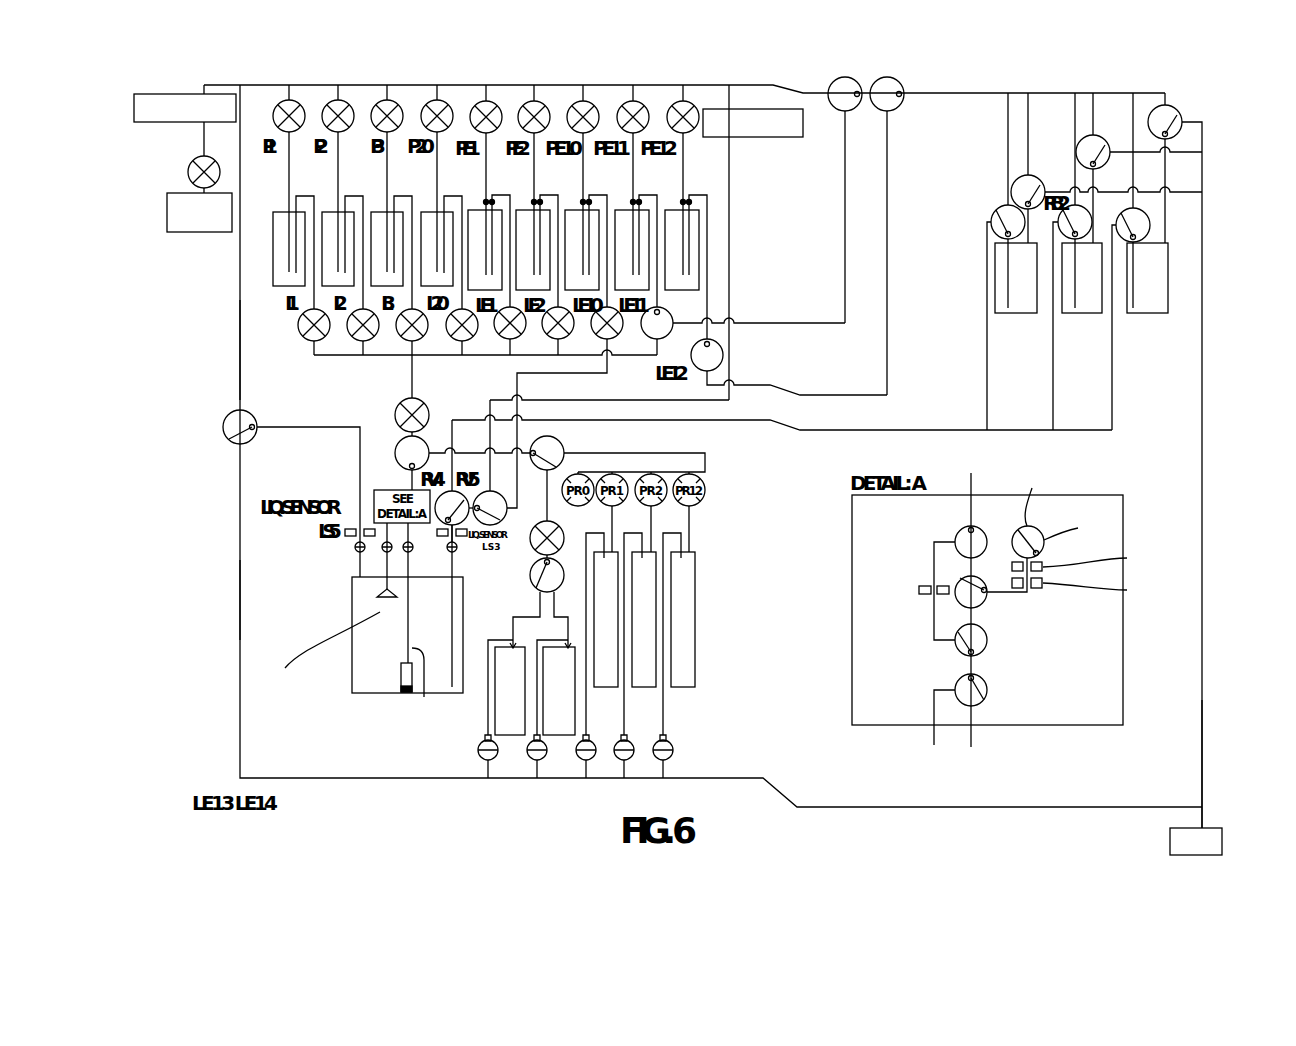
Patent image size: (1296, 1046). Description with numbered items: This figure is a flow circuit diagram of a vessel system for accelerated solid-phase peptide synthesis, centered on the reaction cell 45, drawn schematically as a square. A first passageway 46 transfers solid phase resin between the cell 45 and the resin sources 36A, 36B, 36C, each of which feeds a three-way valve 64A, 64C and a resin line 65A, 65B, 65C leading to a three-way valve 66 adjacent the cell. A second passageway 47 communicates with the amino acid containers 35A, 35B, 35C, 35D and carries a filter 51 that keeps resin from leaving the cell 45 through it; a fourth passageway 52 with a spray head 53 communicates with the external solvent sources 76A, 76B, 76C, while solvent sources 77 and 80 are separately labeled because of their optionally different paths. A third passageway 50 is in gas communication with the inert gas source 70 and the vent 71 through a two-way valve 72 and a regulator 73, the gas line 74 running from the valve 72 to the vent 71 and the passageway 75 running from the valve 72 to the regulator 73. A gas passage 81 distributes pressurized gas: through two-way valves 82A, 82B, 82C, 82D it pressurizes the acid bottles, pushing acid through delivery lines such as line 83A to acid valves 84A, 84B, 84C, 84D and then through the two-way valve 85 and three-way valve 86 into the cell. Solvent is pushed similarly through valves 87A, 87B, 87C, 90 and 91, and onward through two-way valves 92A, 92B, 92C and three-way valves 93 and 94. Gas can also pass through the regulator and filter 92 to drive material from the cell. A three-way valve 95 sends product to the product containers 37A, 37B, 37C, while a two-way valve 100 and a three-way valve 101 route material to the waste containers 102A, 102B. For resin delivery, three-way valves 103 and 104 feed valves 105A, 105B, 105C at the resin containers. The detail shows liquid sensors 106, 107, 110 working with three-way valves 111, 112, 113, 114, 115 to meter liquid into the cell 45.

The reaction cell 45 is at (352, 667).
The first passageway 46 is at (455, 602).
The second passageway 47 is at (410, 386).
The third passageway 50 is at (307, 428).
The filter 51 is at (401, 683).
The fourth passageway 52 is at (358, 568).
The spray head 53 is at (378, 594).
The three-way valve 64A is at (991, 223).
The three-way valve 64C is at (1150, 223).
The resin line 65A is at (987, 404).
The resin line 65B is at (1053, 404).
The resin line 65C is at (1112, 404).
The three-way valve 66 is at (447, 537).
The inert gas source 70 is at (195, 232).
The vent 71 is at (1222, 842).
The two-way valve 72 is at (193, 161).
The regulator 73 is at (176, 94).
The gas line 74 is at (239, 598).
The passageway 75 is at (239, 350).
The external solvent source 76A is at (468, 210).
The external solvent source 76B is at (518, 210).
The external solvent source 76C is at (566, 210).
The external solvent source 77 is at (616, 210).
The external solvent source 80 is at (672, 208).
The gas passage 81 is at (640, 86).
The two-way valve 82A is at (278, 105).
The two-way valve 82B is at (326, 105).
The two-way valve 82C is at (378, 105).
The two-way valve 82D is at (428, 105).
The delivery line 83A is at (312, 300).
The acid valve 84A is at (305, 338).
The acid valve 84B is at (356, 338).
The acid valve 84C is at (420, 338).
The acid valve 84D is at (468, 338).
The two-way valve 85 is at (430, 415).
The three-way valve 86 is at (399, 461).
The valve 87A is at (479, 103).
The valve 87B is at (528, 103).
The valve 87C is at (577, 103).
The valve 90 is at (635, 103).
The valve 91 is at (680, 103).
The regulator and filter 92 is at (750, 137).
The two-way valve 92A is at (523, 331).
The two-way valve 92B is at (571, 331).
The two-way valve 92C is at (620, 331).
The three-way valve / passageway 93 is at (668, 311).
The three-way valve 94 is at (723, 355).
The three-way valve 95 is at (560, 441).
The two-way valve 100 is at (548, 527).
The three-way valve 101 is at (551, 581).
The waste container 102A is at (513, 735).
The waste container 102B is at (567, 735).
The three-way valve 103 is at (845, 77).
The three-way valve 104 is at (886, 78).
The valve 105A is at (1016, 181).
The valve 105B is at (1083, 141).
The valve 105C is at (1176, 113).
The liquid sensor 106 is at (920, 586).
The liquid sensor 107 is at (1043, 566).
The liquid sensor 110 is at (1043, 583).
The three-way valve 111 is at (996, 522).
The three-way valve 112 is at (984, 590).
The three-way valve 113 is at (987, 650).
The three-way valve 114 is at (987, 698).
The three-way valve 115 is at (1036, 530).
The resin source 36A is at (1028, 312).
The resin source 36B is at (1095, 312).
The resin source 36C is at (1162, 312).
The product container 37A is at (616, 687).
The product container 37B is at (660, 687).
The product container 37C is at (700, 687).
The amino acid container 35A is at (274, 212).
The amino acid container 35B is at (323, 212).
The amino acid container 35C is at (373, 212).
The amino acid container 35D is at (422, 212).